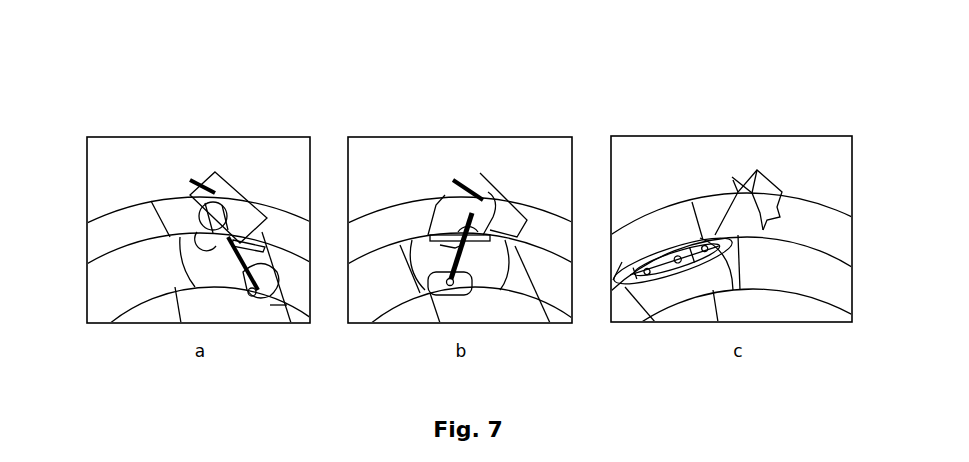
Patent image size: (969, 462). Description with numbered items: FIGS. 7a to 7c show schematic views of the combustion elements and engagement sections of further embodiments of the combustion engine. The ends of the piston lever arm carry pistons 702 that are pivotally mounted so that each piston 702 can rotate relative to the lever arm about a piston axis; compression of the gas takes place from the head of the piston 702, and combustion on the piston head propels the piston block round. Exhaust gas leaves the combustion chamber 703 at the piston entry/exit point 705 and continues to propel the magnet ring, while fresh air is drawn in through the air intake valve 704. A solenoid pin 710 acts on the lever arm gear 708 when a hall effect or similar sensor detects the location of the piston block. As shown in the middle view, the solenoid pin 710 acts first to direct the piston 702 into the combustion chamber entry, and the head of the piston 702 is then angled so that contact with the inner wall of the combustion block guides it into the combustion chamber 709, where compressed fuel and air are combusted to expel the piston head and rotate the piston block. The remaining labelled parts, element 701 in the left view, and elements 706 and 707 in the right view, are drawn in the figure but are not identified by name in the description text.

In FIG. 7a, the cross-ring of the roller cage 701 is at (175, 270).
In FIG. 7a, the piston 702 is at (203, 227).
In FIG. 7a, the combustion chamber 703 is at (246, 220).
In FIG. 7c, the air intake valve 704 is at (733, 178).
In FIG. 7b, the piston entry/exit point 705 is at (449, 250).
In FIG. 7c, the ring 706 is at (797, 277).
In FIG. 7c, the roller with rolling pins 707 is at (658, 236).
In FIG. 7b, the lever arm gear 708 is at (446, 230).
In FIG. 7b, the combustion chamber 709 is at (498, 198).
In FIG. 7b, the solenoid pin 710 is at (473, 230).